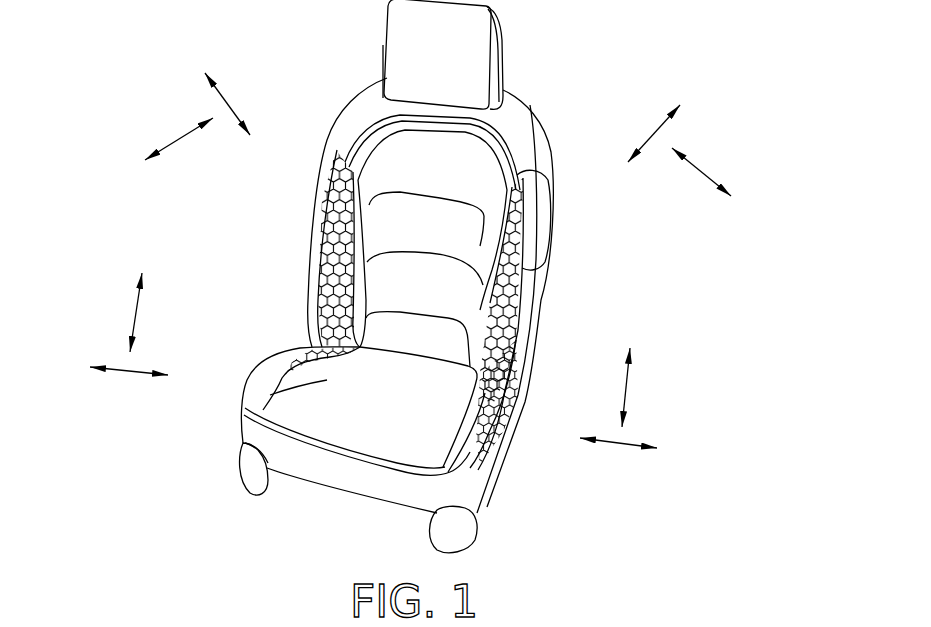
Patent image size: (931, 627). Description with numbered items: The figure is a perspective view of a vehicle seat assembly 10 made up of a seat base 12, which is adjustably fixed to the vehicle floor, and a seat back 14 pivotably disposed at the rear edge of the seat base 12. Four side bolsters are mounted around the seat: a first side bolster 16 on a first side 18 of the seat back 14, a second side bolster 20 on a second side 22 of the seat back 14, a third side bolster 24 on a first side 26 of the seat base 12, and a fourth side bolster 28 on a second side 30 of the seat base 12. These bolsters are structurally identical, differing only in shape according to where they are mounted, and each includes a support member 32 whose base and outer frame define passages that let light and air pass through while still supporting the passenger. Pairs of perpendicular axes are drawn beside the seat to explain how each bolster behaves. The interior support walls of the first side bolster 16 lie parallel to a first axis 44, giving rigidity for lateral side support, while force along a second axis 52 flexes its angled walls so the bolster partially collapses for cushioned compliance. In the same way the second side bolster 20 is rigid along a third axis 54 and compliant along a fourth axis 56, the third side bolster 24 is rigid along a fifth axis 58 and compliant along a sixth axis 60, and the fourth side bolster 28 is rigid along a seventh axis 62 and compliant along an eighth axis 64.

The seat assembly 10 is at (233, 510).
The seat base 12 is at (493, 515).
The seat back 14 is at (537, 100).
The first side bolster 16 is at (476, 420).
The first side 18 is at (505, 428).
The second side bolster 20 is at (268, 378).
The second side 22 is at (243, 418).
The third side bolster 24 is at (543, 290).
The first side 26 is at (560, 200).
The fourth side bolster 28 is at (318, 207).
The second side 30 is at (338, 137).
The support member 32 is at (316, 265).
The first axis 44 is at (620, 445).
The second axis 52 is at (627, 387).
The third axis 54 is at (128, 372).
The fourth axis 56 is at (137, 314).
The fifth axis 58 is at (653, 132).
The sixth axis 60 is at (705, 170).
The seventh axis 62 is at (178, 138).
The eighth axis 64 is at (230, 105).